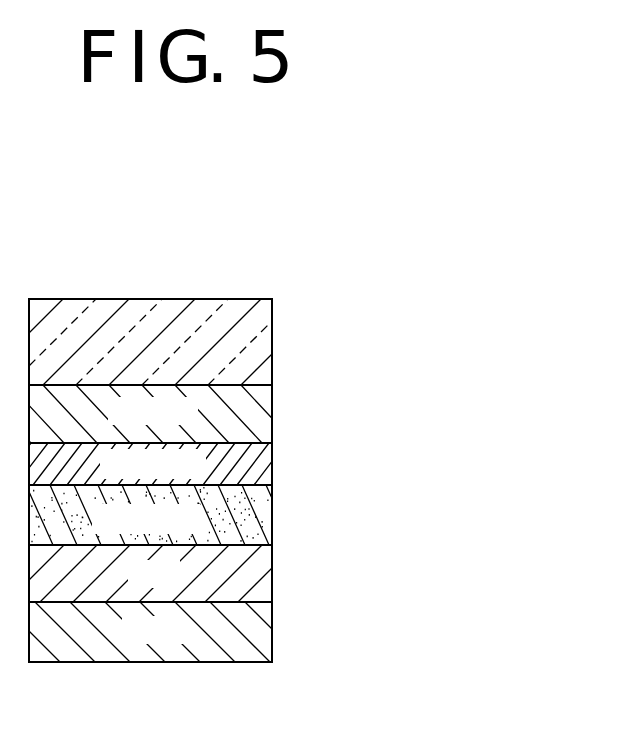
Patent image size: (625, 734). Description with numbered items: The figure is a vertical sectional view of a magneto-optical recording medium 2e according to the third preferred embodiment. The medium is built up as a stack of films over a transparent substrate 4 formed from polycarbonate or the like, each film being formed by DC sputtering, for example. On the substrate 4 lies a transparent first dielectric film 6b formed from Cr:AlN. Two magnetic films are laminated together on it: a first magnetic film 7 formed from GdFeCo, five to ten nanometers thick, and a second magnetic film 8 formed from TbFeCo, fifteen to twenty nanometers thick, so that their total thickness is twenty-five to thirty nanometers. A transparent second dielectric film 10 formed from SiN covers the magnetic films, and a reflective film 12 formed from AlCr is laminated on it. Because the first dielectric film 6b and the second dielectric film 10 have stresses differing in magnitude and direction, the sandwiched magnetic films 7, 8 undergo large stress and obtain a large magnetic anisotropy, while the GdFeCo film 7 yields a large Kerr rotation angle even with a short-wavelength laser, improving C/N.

The magneto-optical recording medium 2e is at (191, 453).
The transparent substrate 4 is at (275, 298).
The first dielectric film 6b is at (270, 399).
The first magnetic film 7 is at (273, 458).
The second magnetic film 8 is at (270, 512).
The second dielectric film 10 is at (270, 573).
The reflective film 12 is at (273, 664).